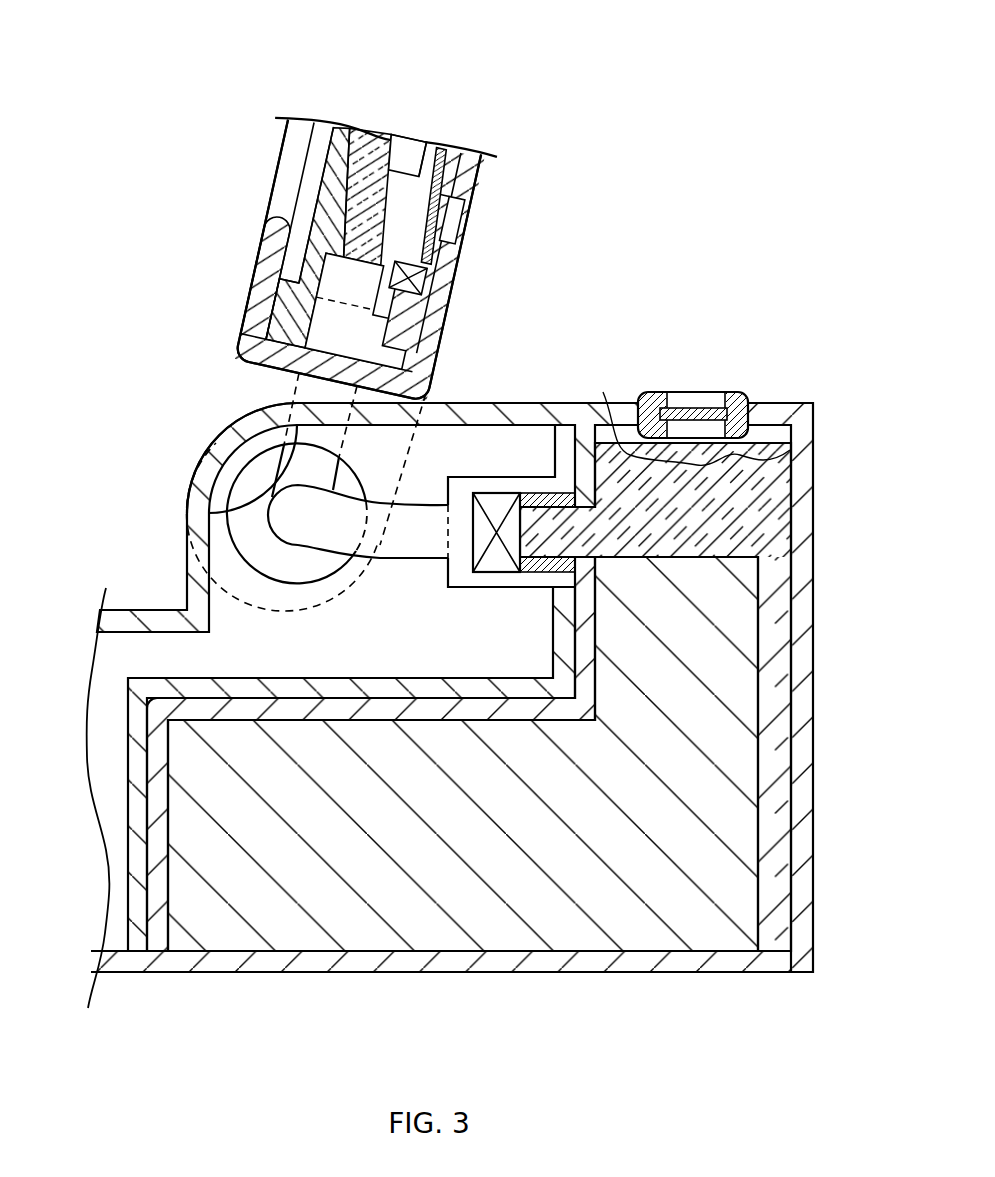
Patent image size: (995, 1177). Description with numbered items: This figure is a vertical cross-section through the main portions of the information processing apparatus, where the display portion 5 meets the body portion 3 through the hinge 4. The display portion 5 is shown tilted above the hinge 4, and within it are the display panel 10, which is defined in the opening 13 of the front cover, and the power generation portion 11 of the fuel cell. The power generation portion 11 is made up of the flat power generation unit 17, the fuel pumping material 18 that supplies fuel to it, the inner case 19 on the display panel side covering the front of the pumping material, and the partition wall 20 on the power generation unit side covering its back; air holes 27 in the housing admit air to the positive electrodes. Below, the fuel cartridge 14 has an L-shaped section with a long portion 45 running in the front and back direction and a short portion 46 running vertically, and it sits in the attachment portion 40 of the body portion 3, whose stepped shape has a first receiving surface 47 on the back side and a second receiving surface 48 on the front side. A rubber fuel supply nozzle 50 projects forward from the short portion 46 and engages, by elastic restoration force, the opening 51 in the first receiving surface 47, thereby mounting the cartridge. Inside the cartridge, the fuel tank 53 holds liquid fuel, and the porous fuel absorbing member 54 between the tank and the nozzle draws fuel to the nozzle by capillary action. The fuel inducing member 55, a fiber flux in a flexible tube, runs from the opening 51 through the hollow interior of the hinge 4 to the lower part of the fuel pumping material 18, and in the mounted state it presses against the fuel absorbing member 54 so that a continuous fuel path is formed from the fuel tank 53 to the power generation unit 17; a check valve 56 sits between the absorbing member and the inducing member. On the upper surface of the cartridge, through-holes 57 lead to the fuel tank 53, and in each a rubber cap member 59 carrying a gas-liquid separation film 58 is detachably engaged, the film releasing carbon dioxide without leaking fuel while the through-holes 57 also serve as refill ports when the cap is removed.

The body portion 3 is at (150, 609).
The hinge 4 is at (245, 468).
The display portion 5 is at (518, 176).
The display panel 10 is at (317, 155).
The power generation portion 11 is at (358, 62).
The opening 13 is at (280, 186).
The fuel cartridge 14 is at (676, 975).
The power generation unit 17 is at (447, 142).
The fuel pumping material 18 is at (392, 143).
The inner case 19 is at (363, 122).
The partition wall 20 is at (428, 152).
The air holes 27 is at (465, 221).
The attachment portion 40 is at (480, 403).
The long portion 45 is at (356, 964).
The short portion 46 is at (807, 694).
The first receiving surface 47 is at (582, 648).
The second receiving surface 48 is at (157, 850).
The fuel supply nozzle 50 is at (532, 571).
The opening 51 is at (545, 500).
The fuel tank 53 is at (218, 940).
The fuel absorbing member 54 is at (780, 513).
The fuel inducing member 55 is at (320, 332).
The check valve 56 is at (488, 568).
The through-holes 57 is at (677, 390).
The gas-liquid separation film 58 is at (703, 407).
The cap member 59 is at (735, 394).